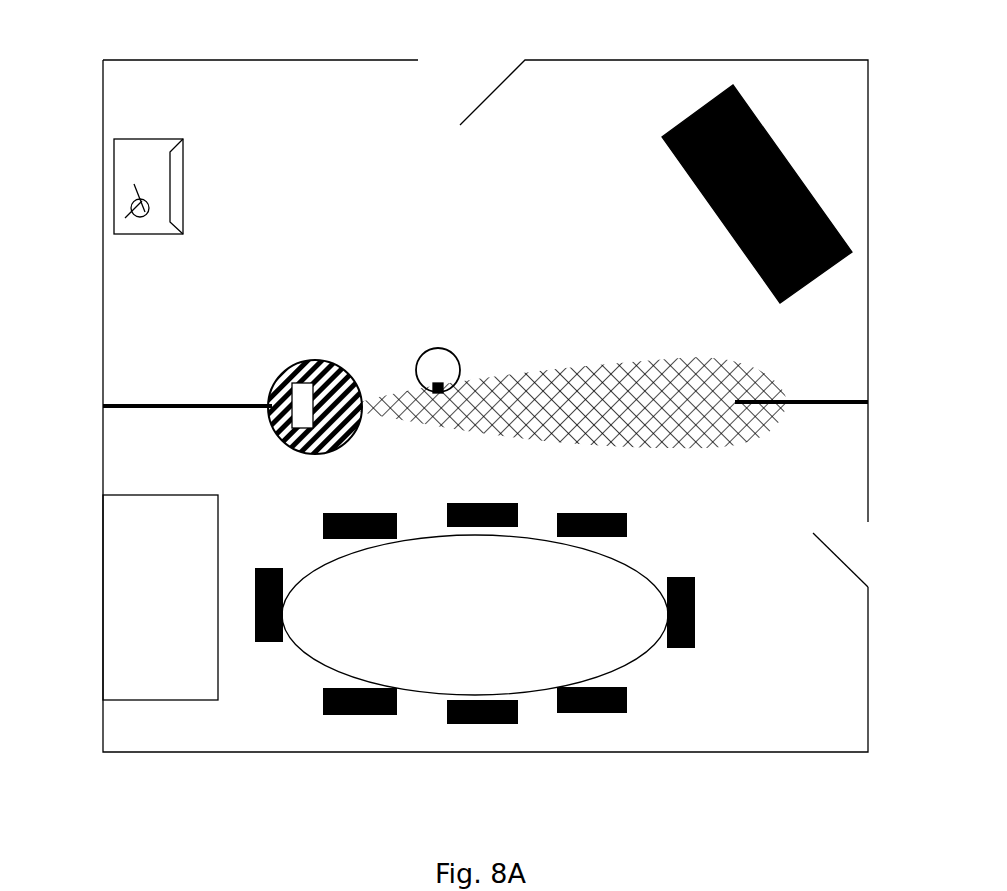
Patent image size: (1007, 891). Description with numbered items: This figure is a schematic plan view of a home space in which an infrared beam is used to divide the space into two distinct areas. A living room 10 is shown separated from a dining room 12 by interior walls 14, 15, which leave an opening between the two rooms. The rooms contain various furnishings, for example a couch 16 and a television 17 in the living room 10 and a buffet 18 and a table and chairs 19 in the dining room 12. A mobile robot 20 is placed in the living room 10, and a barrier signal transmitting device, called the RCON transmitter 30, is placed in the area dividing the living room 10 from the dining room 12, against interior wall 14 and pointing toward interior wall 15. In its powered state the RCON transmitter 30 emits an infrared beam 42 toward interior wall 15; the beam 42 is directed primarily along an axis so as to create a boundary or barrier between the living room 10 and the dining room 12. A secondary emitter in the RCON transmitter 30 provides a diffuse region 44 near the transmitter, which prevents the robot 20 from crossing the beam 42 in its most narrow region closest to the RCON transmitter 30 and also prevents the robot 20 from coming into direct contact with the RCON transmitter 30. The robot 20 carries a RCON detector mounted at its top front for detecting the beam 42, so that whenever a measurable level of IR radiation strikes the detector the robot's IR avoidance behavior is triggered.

The living room 10 is at (147, 83).
The dining room 12 is at (790, 622).
The interior wall 14 is at (146, 405).
The interior wall 15 is at (826, 400).
The couch 16 is at (777, 145).
The television 17 is at (157, 157).
The buffet 18 is at (145, 637).
The table and chairs 19 is at (590, 643).
The mobile robot 20 is at (438, 348).
The RCON transmitter 30 is at (302, 395).
The infrared beam 42 is at (637, 368).
The diffuse region 44 is at (292, 446).